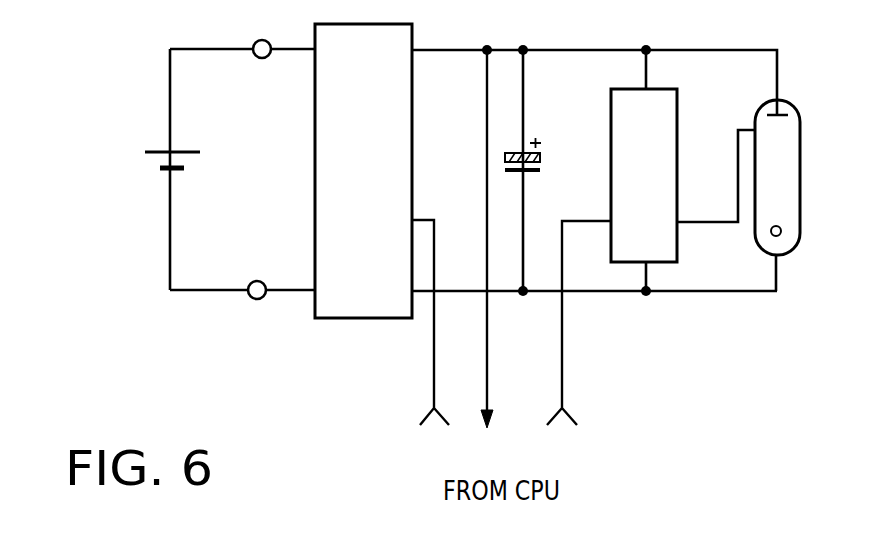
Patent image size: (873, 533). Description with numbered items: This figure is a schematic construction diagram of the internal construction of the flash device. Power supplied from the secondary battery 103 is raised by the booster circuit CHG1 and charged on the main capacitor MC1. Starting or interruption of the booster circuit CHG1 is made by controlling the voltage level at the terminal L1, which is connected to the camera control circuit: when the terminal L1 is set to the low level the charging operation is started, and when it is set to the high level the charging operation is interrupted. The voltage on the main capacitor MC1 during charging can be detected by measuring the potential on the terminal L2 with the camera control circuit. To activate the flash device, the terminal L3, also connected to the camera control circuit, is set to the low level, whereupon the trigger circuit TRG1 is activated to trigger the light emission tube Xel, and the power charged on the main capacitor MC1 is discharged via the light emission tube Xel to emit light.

The secondary battery 103 is at (150, 158).
The booster circuit CHG1 is at (315, 114).
The main capacitor MC1 is at (537, 170).
The trigger circuit TRG1 is at (677, 110).
The light emission tube Xel is at (796, 177).
The terminal L1 is at (430, 342).
The terminal L2 is at (486, 257).
The terminal L3 is at (579, 343).